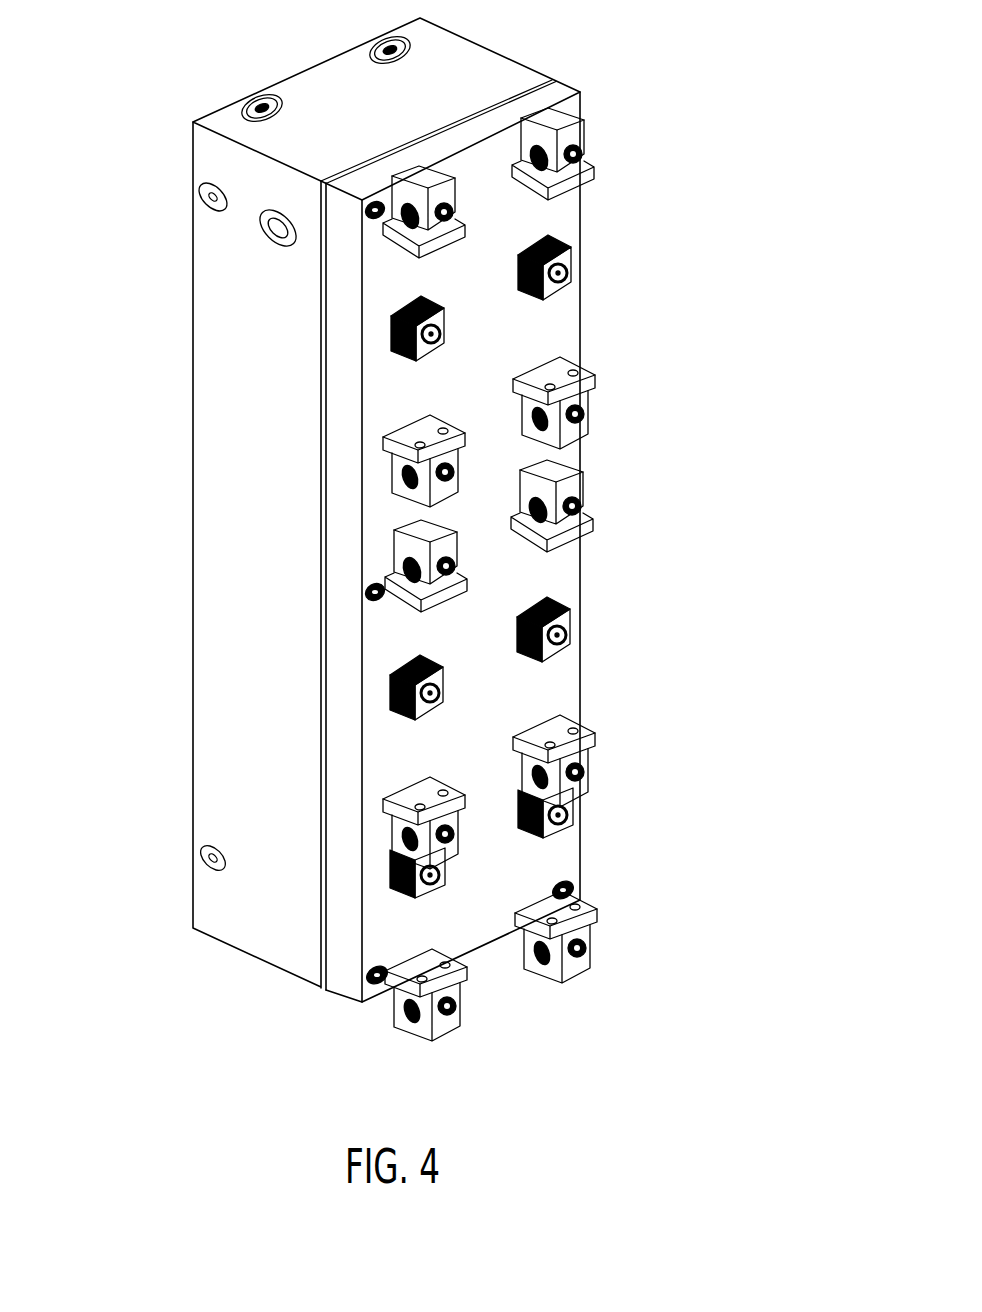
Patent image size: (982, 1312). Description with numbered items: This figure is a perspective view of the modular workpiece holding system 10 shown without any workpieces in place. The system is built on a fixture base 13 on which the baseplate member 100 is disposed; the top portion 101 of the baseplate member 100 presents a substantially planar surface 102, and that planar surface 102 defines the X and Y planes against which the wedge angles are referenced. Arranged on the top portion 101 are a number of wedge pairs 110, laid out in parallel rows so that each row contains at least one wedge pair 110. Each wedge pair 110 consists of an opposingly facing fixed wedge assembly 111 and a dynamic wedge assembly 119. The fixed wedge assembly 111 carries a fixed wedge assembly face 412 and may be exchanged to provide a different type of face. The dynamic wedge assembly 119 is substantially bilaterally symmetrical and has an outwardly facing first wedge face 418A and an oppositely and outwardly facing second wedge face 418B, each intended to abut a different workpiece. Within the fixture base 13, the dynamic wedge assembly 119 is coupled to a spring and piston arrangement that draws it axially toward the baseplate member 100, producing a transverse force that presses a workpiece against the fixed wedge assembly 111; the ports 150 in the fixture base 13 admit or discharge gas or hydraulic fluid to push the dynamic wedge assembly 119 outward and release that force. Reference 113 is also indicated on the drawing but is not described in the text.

The modular workpiece holding system 10 is at (435, 559).
The fixture base 13 is at (332, 504).
The baseplate member 100 is at (551, 96).
The top portion 101 is at (570, 334).
The planar surface 102 is at (370, 515).
The wedge pair 110 is at (620, 583).
The fixed wedge assembly 111 is at (580, 476).
The valve column 113 is at (500, 1055).
The dynamic wedge assembly 119 is at (608, 256).
The port 150 is at (198, 181).
The fixed wedge assembly face 412 is at (403, 435).
The first wedge face 418A is at (280, 693).
The second wedge face 418B is at (427, 718).